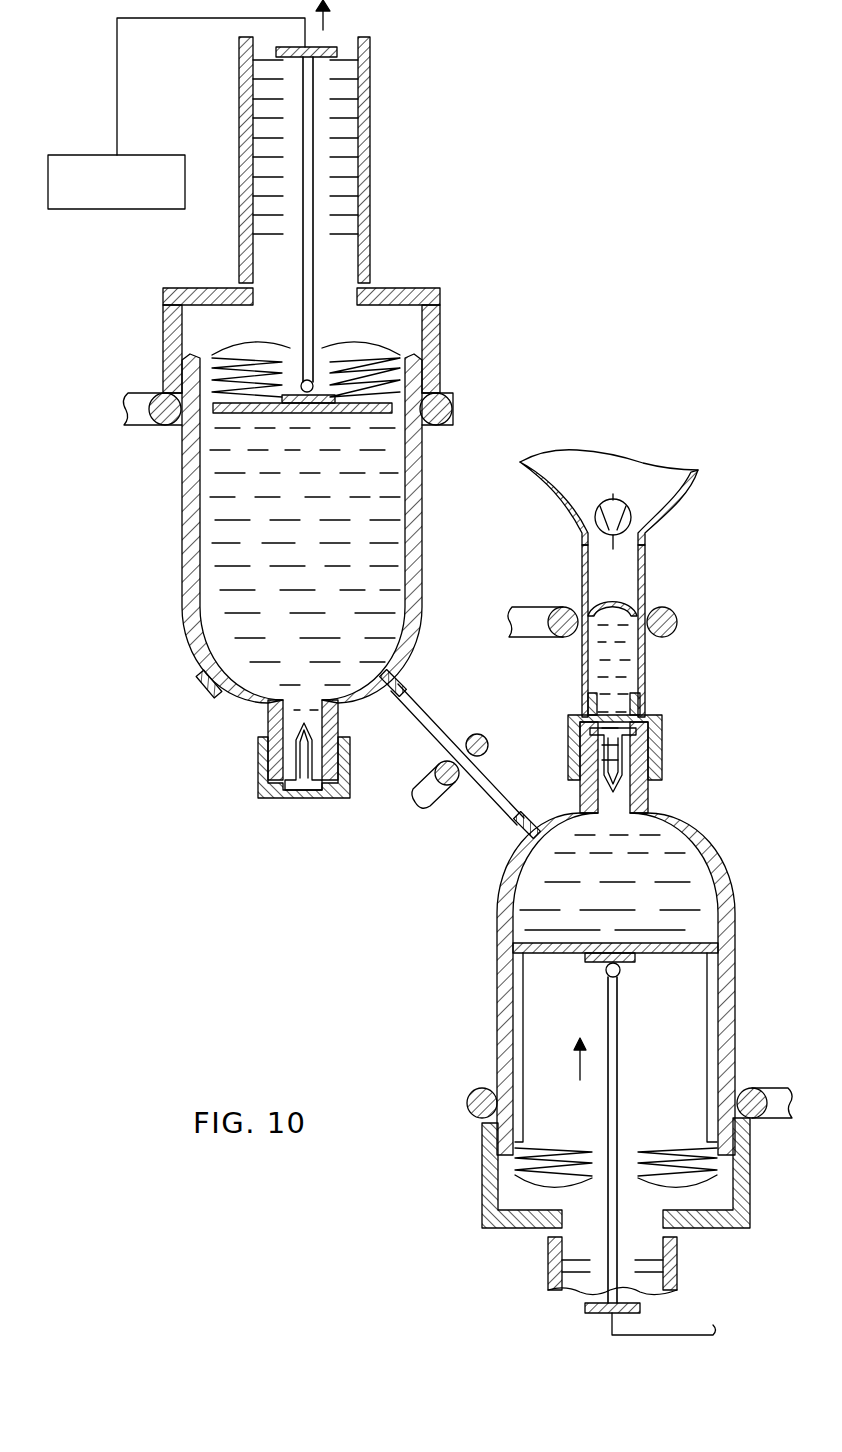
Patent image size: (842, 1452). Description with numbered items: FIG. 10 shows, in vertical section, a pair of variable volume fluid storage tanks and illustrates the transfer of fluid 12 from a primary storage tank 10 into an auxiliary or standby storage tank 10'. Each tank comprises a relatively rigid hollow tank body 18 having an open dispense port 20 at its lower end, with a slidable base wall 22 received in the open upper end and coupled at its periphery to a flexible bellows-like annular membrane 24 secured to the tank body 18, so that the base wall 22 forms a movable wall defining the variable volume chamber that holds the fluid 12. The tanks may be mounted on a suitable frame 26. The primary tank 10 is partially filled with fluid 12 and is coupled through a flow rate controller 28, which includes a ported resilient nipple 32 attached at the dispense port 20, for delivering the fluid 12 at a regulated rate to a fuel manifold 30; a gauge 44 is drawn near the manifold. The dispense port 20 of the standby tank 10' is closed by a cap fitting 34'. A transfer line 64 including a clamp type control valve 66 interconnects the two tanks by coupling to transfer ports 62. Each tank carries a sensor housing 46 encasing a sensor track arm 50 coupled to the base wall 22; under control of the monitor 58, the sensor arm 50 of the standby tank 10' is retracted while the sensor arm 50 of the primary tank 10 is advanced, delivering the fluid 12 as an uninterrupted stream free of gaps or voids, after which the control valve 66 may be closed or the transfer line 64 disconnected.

The primary storage tank 10 is at (783, 921).
The standby storage tank 10' is at (140, 625).
The fluid 12 is at (390, 553).
The tank body 18 is at (182, 530).
The dispense port 20 is at (268, 720).
The base wall 22 is at (377, 418).
The annular membrane 24 is at (356, 342).
The frame 26 is at (143, 393).
The flow rate controller 28 is at (684, 703).
The fuel manifold 30 is at (670, 510).
The resilient nipple 32 is at (645, 681).
The cap fitting 34' is at (280, 780).
The gauge 44 is at (618, 503).
The sensor housing 46 is at (372, 225).
The sensor track arm 50 is at (313, 294).
The monitor 58 is at (101, 155).
The transfer ports 62 is at (402, 678).
The transfer line 64 is at (437, 722).
The control valve 66 is at (458, 787).